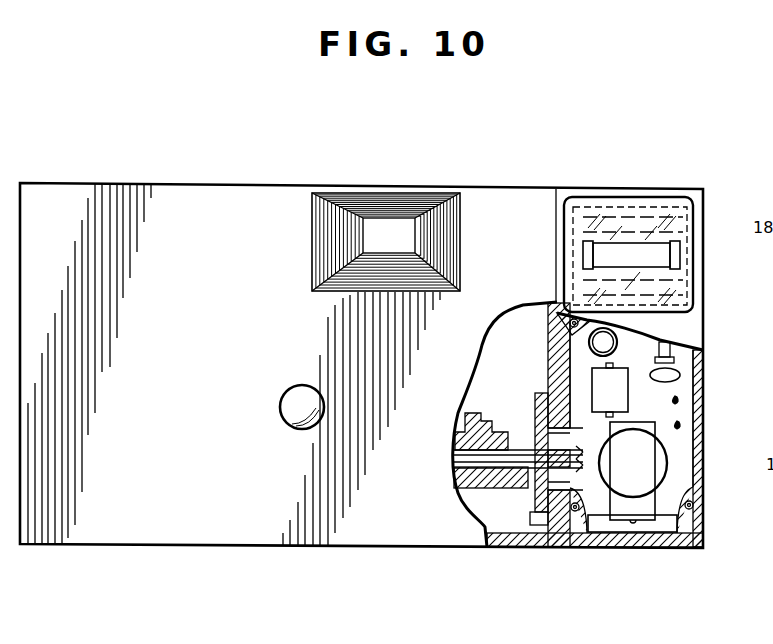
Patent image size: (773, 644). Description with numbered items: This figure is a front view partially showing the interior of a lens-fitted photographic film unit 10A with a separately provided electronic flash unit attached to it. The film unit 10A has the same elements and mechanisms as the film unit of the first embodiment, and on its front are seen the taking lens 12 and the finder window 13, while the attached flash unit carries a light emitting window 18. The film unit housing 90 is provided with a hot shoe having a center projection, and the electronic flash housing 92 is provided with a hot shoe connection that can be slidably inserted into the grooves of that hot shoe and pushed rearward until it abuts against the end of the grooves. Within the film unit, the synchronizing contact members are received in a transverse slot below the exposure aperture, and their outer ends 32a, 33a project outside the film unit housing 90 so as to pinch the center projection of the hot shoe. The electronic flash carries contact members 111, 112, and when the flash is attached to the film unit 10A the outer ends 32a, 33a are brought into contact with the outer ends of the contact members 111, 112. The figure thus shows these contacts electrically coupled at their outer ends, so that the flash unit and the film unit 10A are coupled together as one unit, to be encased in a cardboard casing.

The lens-fitted film unit 10A is at (296, 172).
The taking lens 12 is at (302, 397).
The finder window 13 is at (387, 203).
The light emitting window 18 is at (628, 215).
The outer end of contact member 32a is at (531, 458).
The outer end of contact member 33a is at (520, 470).
The film unit housing 90 is at (506, 547).
The electronic flash housing 92 is at (698, 405).
The contact member 111 is at (582, 451).
The contact member 112 is at (578, 478).